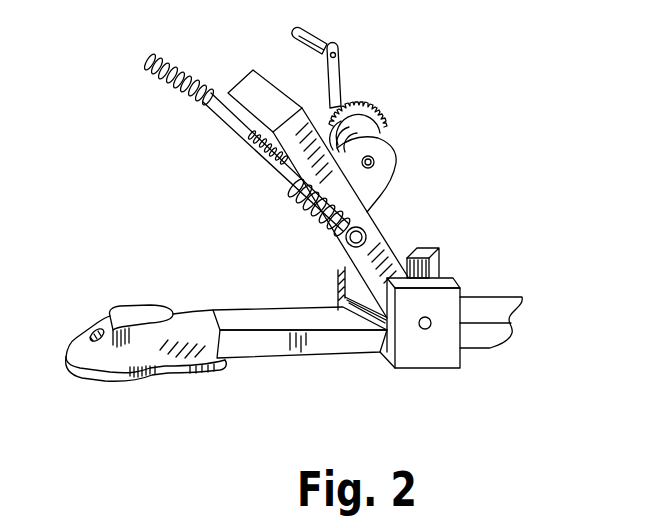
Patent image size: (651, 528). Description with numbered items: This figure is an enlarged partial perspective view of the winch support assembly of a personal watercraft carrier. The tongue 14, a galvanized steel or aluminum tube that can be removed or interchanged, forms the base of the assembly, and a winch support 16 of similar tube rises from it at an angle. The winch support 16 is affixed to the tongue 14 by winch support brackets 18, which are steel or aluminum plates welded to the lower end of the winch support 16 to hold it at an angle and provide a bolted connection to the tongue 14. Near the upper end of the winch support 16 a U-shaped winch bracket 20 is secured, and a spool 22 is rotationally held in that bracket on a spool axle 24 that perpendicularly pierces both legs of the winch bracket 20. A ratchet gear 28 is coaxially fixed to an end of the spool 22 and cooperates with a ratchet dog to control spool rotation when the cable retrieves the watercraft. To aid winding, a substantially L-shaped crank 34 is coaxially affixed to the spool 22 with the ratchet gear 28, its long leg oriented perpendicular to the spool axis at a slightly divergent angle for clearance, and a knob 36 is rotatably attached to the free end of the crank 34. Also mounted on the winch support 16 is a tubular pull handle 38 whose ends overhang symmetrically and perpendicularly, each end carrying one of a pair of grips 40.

The tongue 14 is at (238, 317).
The winch support 16 is at (373, 240).
The winch support brackets 18 is at (443, 358).
The U-shaped winch bracket 20 is at (372, 190).
The spool 22 is at (394, 158).
The spool axle 24 is at (374, 160).
The ratchet gear 28 is at (367, 103).
The crank 34 is at (343, 78).
The knob 36 is at (297, 33).
The pull handle 38 is at (203, 125).
The grips 40 is at (143, 68).